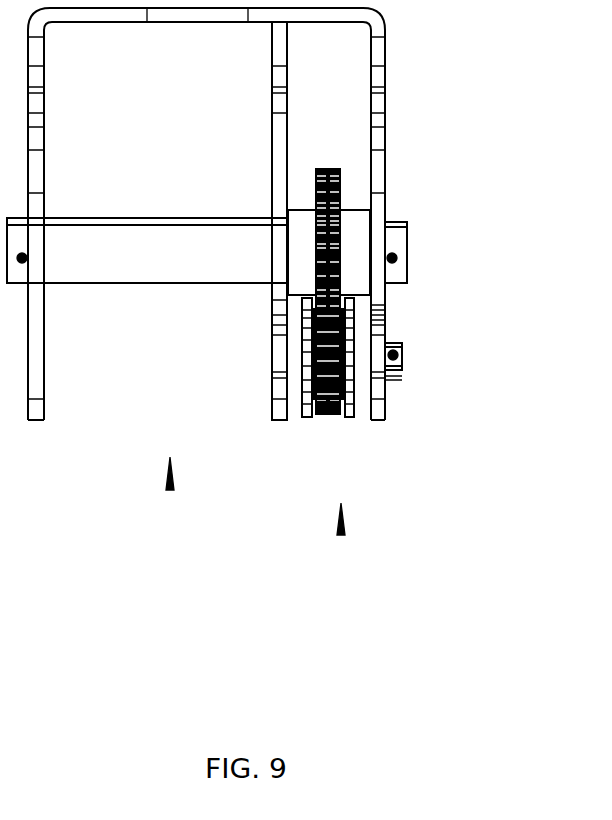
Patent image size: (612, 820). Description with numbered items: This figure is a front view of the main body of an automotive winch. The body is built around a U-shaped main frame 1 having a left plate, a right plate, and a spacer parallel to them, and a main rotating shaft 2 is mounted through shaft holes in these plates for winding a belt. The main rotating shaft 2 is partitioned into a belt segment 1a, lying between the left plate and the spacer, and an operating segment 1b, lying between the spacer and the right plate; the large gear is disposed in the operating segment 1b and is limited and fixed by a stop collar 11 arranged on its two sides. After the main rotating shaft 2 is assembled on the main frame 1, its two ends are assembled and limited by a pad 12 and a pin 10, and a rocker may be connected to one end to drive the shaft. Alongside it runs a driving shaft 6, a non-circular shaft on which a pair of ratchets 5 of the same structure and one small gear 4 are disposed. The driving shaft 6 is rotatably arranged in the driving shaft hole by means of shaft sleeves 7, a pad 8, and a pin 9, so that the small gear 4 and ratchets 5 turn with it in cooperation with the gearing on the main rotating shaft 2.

The main frame 1 is at (385, 102).
The belt segment 1a is at (170, 490).
The operating segment 1b is at (341, 535).
The main rotating shaft 2 is at (85, 265).
The small gear 4 is at (323, 403).
The ratchets 5 is at (350, 405).
The driving shaft 6 is at (387, 383).
The shaft sleeves 7 is at (300, 365).
The pad 8 is at (390, 330).
The pin 9 is at (402, 368).
The pin 10 is at (408, 258).
The stop collar 11 is at (358, 222).
The pad 12 is at (390, 292).